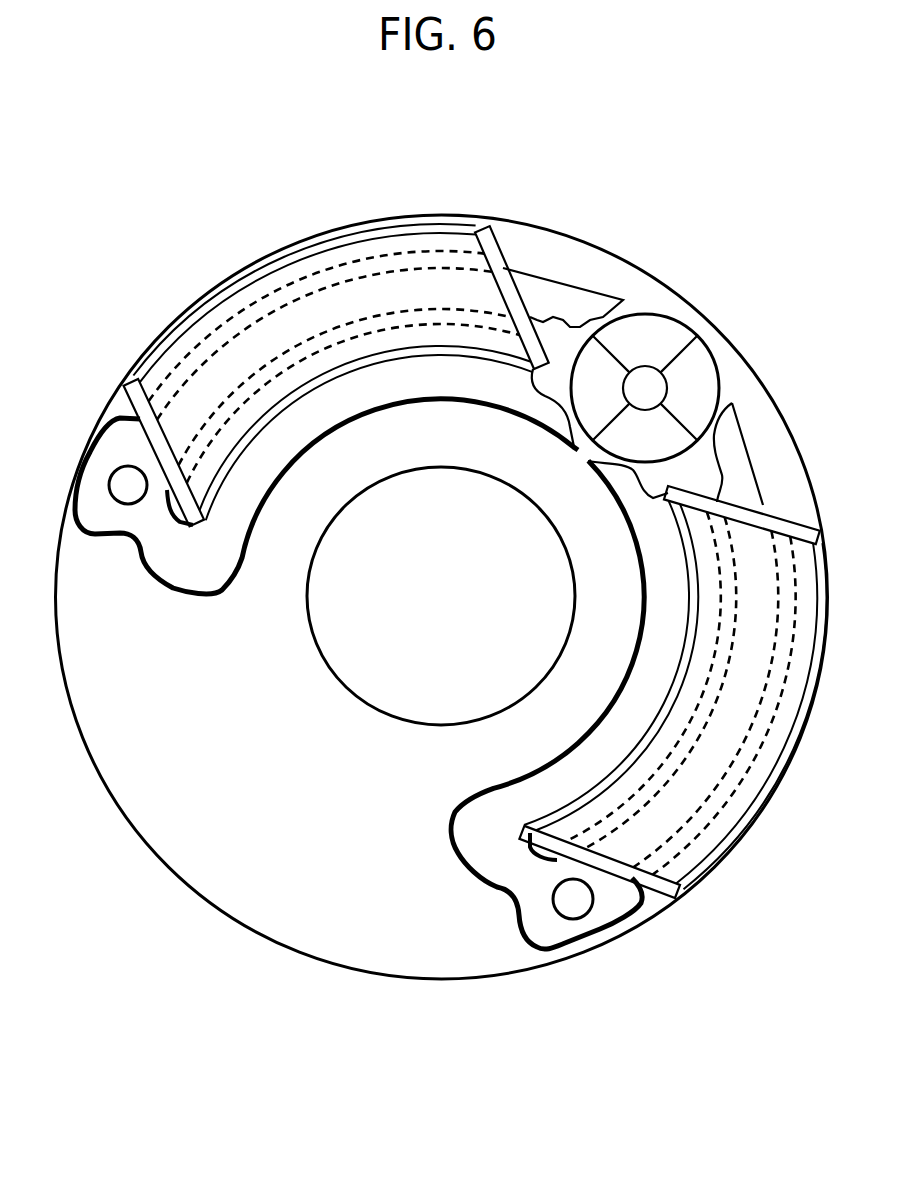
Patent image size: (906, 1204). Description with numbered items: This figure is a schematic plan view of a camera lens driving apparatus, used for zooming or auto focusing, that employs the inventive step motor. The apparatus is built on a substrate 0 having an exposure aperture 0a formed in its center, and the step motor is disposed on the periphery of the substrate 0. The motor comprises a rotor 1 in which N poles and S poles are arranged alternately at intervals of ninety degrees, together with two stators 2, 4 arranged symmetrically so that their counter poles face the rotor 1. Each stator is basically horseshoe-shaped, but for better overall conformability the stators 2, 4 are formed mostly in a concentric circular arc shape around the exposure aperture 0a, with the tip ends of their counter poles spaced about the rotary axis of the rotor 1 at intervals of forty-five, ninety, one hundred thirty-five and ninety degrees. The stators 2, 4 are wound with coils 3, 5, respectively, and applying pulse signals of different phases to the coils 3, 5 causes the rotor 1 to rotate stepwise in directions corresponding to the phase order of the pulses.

The substrate 0 is at (107, 800).
The exposure aperture 0a is at (340, 687).
The rotor 1 is at (676, 309).
The stator 2 is at (458, 855).
The coil 3 is at (760, 800).
The stator 4 is at (168, 582).
The coil 5 is at (213, 297).